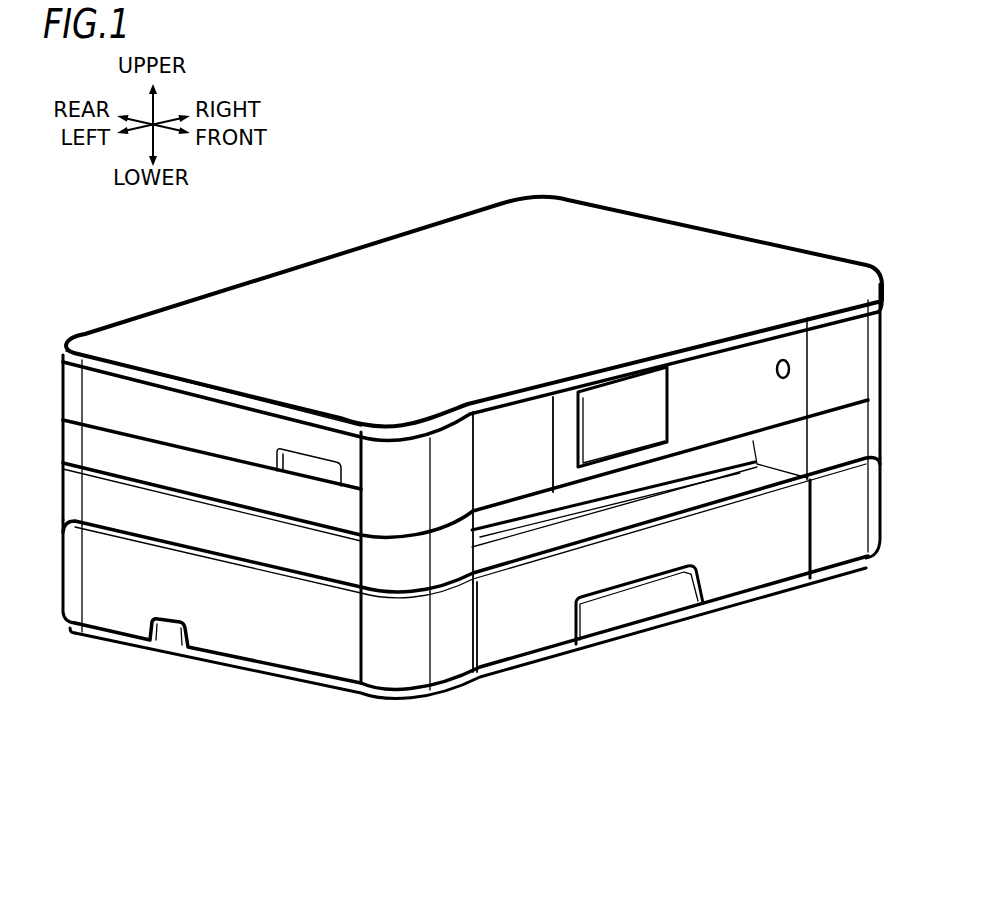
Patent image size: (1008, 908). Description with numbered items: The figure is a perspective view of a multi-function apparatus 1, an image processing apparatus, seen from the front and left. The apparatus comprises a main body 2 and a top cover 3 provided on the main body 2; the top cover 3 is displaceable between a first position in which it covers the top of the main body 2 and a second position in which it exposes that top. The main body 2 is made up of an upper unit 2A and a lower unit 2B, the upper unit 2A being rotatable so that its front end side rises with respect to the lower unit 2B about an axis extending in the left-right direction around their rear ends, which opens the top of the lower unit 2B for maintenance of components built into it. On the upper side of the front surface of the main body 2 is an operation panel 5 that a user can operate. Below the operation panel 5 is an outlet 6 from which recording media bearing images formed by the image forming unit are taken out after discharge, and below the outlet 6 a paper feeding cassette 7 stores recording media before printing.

The multi-function apparatus 1 is at (288, 236).
The main body 2 is at (393, 643).
The upper unit 2A is at (153, 393).
The lower unit 2B is at (153, 463).
The top cover 3 is at (597, 240).
The operation panel 5 is at (700, 372).
The outlet 6 is at (602, 498).
The paper feeding cassette 7 is at (750, 560).